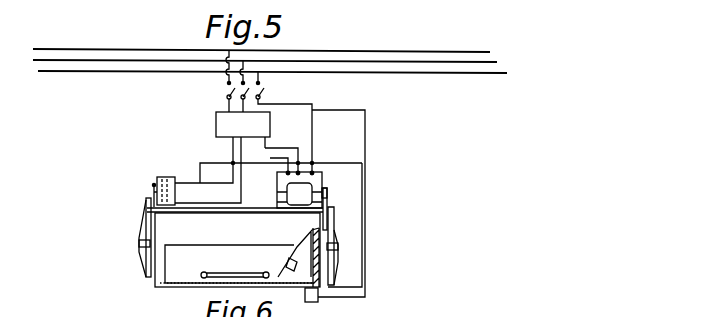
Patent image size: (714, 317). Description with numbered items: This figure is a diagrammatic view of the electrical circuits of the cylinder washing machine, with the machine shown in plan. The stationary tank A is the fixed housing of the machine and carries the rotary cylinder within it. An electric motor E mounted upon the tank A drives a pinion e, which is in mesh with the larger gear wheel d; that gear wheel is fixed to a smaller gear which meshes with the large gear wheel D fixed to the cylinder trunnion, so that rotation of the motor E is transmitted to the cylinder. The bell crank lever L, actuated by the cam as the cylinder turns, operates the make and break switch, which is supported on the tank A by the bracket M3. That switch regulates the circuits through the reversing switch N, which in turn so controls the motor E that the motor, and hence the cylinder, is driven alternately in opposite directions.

The reversing switch N is at (216, 125).
The bracket M3 is at (157, 178).
The bell crank lever L is at (146, 218).
The electric motor E is at (310, 193).
The pinion e is at (327, 192).
The larger gear wheel d is at (329, 203).
The large gear wheel D is at (336, 238).
The stationary tank A is at (184, 288).